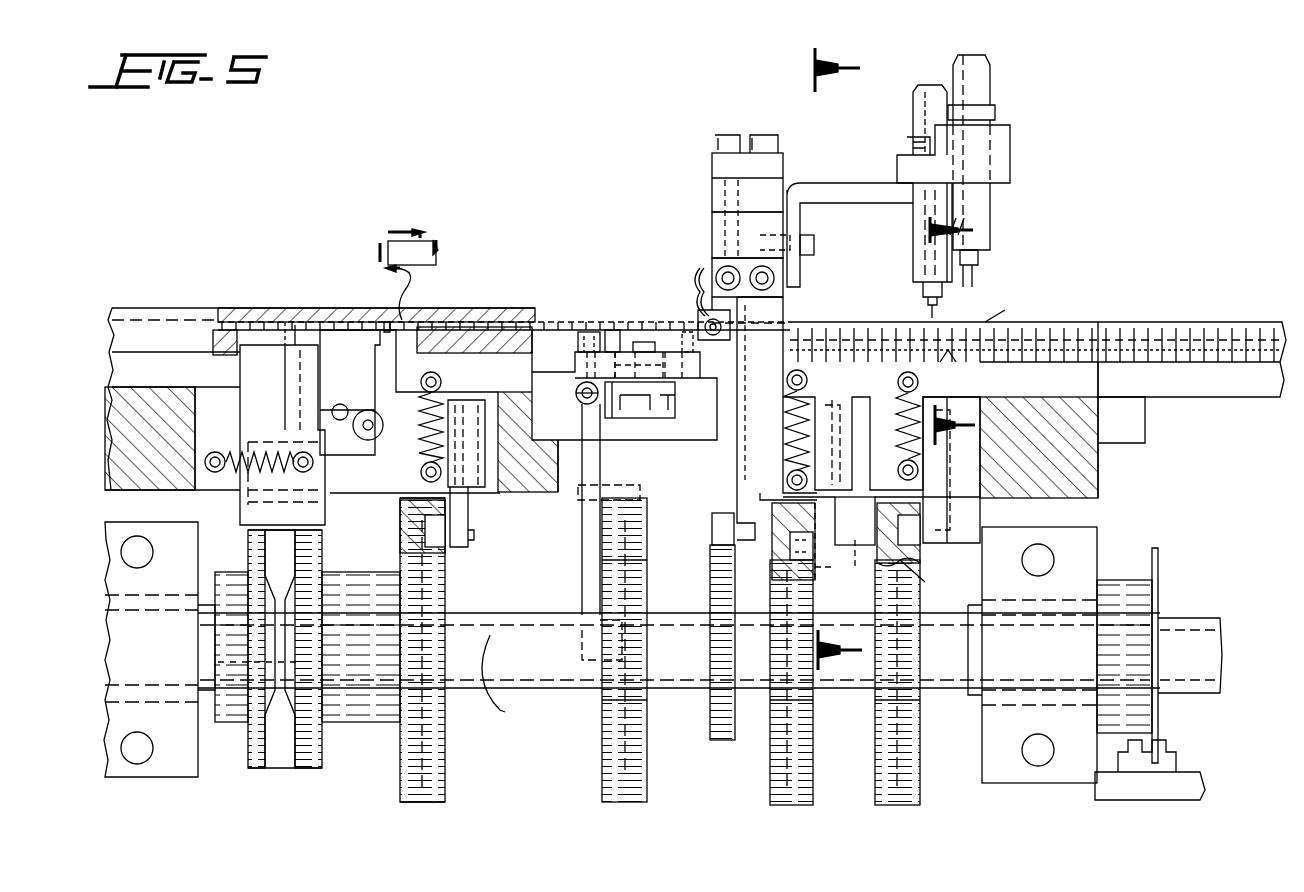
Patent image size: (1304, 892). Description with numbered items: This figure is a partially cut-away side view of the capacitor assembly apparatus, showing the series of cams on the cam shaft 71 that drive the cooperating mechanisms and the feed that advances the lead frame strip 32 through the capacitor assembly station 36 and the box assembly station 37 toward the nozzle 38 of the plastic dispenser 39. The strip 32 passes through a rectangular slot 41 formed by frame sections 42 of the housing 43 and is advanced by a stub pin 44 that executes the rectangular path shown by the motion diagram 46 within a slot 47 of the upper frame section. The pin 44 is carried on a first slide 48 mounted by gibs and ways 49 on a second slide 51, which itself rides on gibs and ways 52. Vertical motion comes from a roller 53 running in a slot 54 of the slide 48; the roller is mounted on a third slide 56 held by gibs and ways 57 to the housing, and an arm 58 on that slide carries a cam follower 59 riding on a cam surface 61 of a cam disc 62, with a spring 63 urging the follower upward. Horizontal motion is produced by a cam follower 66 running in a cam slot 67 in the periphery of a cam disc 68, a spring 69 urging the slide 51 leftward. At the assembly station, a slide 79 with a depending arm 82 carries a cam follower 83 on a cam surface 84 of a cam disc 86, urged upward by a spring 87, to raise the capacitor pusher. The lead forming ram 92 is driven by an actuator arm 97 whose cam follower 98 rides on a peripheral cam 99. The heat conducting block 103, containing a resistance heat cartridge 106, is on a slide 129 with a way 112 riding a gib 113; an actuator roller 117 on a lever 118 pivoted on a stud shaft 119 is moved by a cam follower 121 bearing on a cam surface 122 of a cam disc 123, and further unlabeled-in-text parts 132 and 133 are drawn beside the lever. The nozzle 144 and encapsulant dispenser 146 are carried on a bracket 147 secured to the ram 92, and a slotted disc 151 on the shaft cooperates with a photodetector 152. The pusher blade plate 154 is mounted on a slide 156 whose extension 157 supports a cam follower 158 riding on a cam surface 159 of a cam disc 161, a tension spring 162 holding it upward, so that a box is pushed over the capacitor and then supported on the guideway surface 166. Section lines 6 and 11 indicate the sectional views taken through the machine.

The section line 6- 6 is at (845, 360).
The section line 11- 11 is at (957, 324).
The lead frame strip 32 is at (128, 300).
The capacitor assembly station 36 is at (700, 270).
The box assembly station 37 is at (1012, 311).
The nozzle 38 is at (975, 282).
The plastic dispenser 39 is at (990, 205).
The rectangular slot 41 is at (213, 330).
The frame sections 42 is at (546, 325).
The housing 43 is at (482, 320).
The stub pin 44 is at (388, 322).
The motion diagram 46 is at (405, 240).
The slot 47 is at (405, 318).
The first slide 48 is at (375, 380).
The gibs and ways 49 is at (292, 335).
The second slide 51 is at (240, 396).
The gibs and ways 52 is at (325, 498).
The roller 53 is at (358, 440).
The slot 54 is at (341, 405).
The third slide 56 is at (480, 395).
The gibs and ways 57 is at (470, 502).
The arm 58 is at (470, 520).
The cam follower 59 is at (445, 548).
The cam surface 61 is at (445, 758).
The cam disc 62 is at (400, 768).
The spring 63 is at (445, 400).
The cam follower 66 is at (275, 540).
The cam slot 67 is at (290, 555).
The cam disc 68 is at (305, 755).
The spring 69 is at (262, 448).
The cam shaft 71 is at (530, 620).
The slide 79 is at (826, 430).
The depending arm 82 is at (815, 512).
The cam follower 83 is at (790, 545).
The cam surface 84 is at (812, 775).
The cam disc 86 is at (770, 767).
The spring 87 is at (786, 440).
The lead forming ram 92 is at (712, 205).
The actuator arm 97 is at (740, 456).
The cam follower 98 is at (720, 513).
The cam 99 is at (712, 570).
The heat conducting block 103 is at (712, 318).
The resistance heat cartridge 106 is at (705, 320).
The way 112 is at (618, 416).
The gib 113 is at (644, 416).
The actuator roller 117 is at (580, 332).
The lever 118 is at (595, 466).
The stud shaft 119 is at (578, 495).
The cam follower 121 is at (615, 635).
The cam surface 122 is at (612, 768).
The cam disc 123 is at (602, 785).
The slide 129 is at (632, 362).
The spring seat 132 is at (578, 388).
The roller 133 is at (578, 396).
The nozzle 144 is at (930, 314).
The encapsulant dispenser 146 is at (913, 250).
The bracket 147 is at (848, 183).
The disc 151 is at (1160, 573).
The photodetector 152 is at (1165, 750).
The pusher blade plate 154 is at (1062, 410).
The slide 156 is at (940, 470).
The extension 157 is at (925, 515).
The cam follower 158 is at (937, 574).
The cam surface 159 is at (920, 760).
The cam disc 161 is at (920, 790).
The tension spring 162 is at (896, 430).
The guideway surface 166 is at (950, 362).